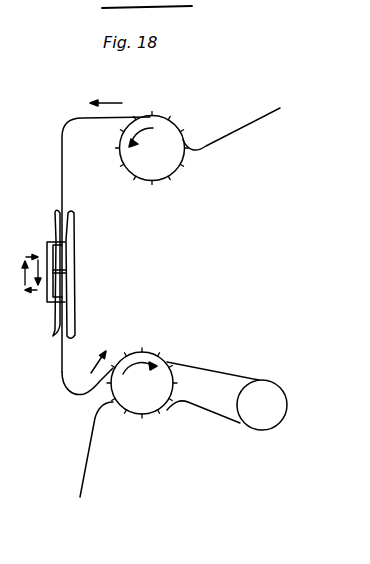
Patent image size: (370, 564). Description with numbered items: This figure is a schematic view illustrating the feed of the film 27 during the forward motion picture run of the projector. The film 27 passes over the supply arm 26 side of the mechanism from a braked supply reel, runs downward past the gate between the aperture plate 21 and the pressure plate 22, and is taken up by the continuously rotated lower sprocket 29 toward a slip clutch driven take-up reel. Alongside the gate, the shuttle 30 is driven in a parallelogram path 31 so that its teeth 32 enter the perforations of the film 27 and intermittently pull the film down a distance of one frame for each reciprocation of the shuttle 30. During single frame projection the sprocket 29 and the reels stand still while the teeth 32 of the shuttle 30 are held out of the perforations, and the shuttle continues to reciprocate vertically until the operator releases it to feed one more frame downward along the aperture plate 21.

The aperture plate 21 is at (54, 214).
The pressure plate 22 is at (75, 222).
The supply arm 26 is at (170, 167).
The film 27 is at (225, 142).
The lower sprocket 29 is at (158, 372).
The shuttle 30 is at (50, 302).
The parallelogram path 31 is at (25, 285).
The teeth 32 is at (65, 243).